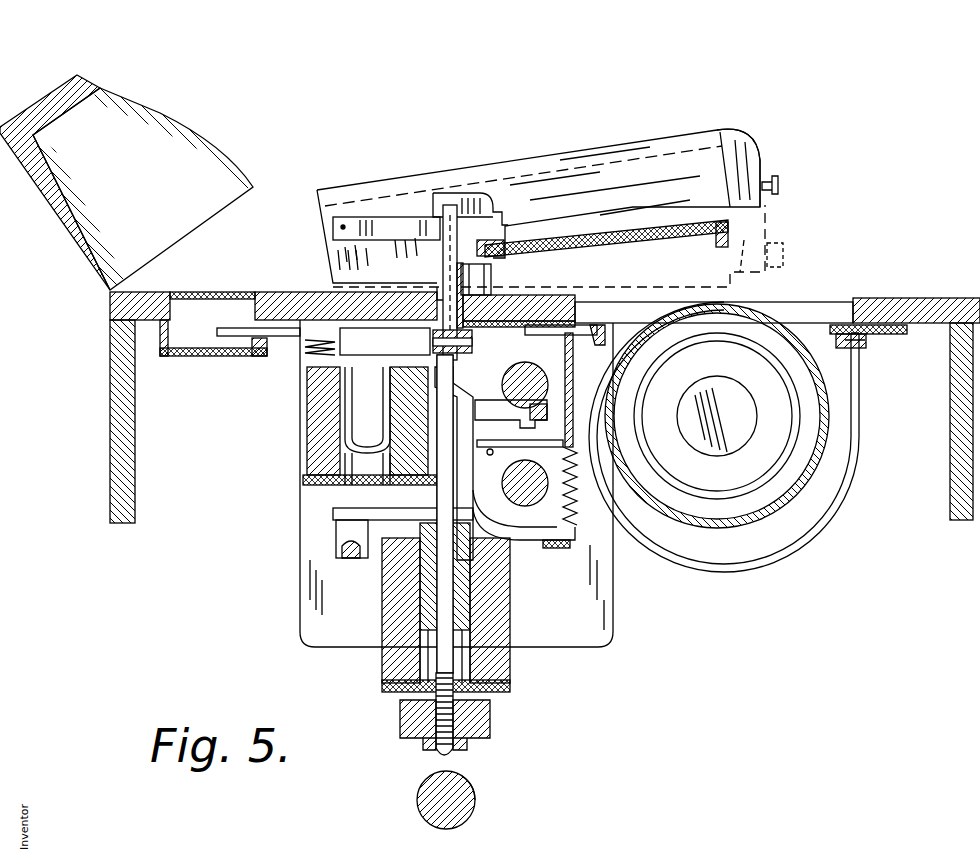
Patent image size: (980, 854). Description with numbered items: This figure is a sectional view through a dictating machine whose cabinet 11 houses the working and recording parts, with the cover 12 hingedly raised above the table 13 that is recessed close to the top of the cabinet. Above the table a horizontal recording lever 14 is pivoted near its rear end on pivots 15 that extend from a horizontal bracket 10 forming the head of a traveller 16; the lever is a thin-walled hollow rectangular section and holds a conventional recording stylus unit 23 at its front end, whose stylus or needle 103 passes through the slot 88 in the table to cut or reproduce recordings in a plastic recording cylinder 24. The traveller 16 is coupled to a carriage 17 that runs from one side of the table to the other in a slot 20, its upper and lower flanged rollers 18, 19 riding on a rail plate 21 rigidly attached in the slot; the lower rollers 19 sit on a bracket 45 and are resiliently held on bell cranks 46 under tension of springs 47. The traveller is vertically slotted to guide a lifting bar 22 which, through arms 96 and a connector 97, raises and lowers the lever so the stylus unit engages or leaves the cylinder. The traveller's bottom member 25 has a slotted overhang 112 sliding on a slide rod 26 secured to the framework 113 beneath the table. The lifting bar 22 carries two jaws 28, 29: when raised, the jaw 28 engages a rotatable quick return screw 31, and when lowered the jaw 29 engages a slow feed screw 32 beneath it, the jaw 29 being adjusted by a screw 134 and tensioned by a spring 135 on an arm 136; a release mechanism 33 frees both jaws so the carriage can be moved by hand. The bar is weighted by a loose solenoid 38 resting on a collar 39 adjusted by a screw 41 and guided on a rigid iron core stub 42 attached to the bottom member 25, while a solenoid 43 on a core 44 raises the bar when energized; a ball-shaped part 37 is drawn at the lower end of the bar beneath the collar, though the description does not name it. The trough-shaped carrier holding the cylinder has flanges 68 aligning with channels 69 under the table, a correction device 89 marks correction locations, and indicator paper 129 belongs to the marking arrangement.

The horizontal bracket 10 is at (335, 240).
The cabinet 11 is at (108, 410).
The cover 12 is at (42, 201).
The table 13 is at (935, 302).
The horizontal recording lever 14 is at (550, 168).
The pivots 15 is at (340, 227).
The traveller 16 is at (468, 392).
The carriage 17 is at (462, 195).
The upper flanged rollers 18 is at (492, 282).
The lower flanged rollers 19 is at (473, 342).
The slot 20 is at (443, 300).
The rail plate 21 is at (485, 296).
The lifting bar 22 is at (440, 497).
The recording stylus unit 23 is at (745, 150).
The plastic recording cylinder 24 is at (832, 386).
The bottom member 25 is at (333, 513).
The slide rod 26 is at (348, 560).
The jaw 28 is at (548, 410).
The jaw 29 is at (548, 444).
The quick return screw 31 is at (548, 370).
The slow feed screw 32 is at (502, 483).
The release mechanism 33 is at (476, 794).
The ball 37 is at (417, 798).
The loose solenoid 38 is at (512, 670).
The collar 39 is at (490, 720).
The screw 41 is at (436, 694).
The rigid iron core stub 42 is at (385, 650).
The solenoid 43 is at (307, 463).
The core 44 is at (367, 426).
The bracket 45 is at (385, 342).
The bell cranks 46 is at (432, 340).
The springs 47 is at (303, 356).
The flanges 68 is at (855, 350).
The channels 69 is at (600, 333).
The slot 88 is at (785, 306).
The correction device 89 is at (245, 298).
The arms 96 is at (477, 244).
The connector 97 is at (585, 248).
The stylus or needle 103 is at (716, 238).
The slotted overhang 112 is at (342, 548).
The framework 113 is at (300, 604).
The indicator paper 129 is at (230, 338).
The screw 134 is at (547, 549).
The spring 135 is at (578, 493).
The arm 136 is at (524, 515).